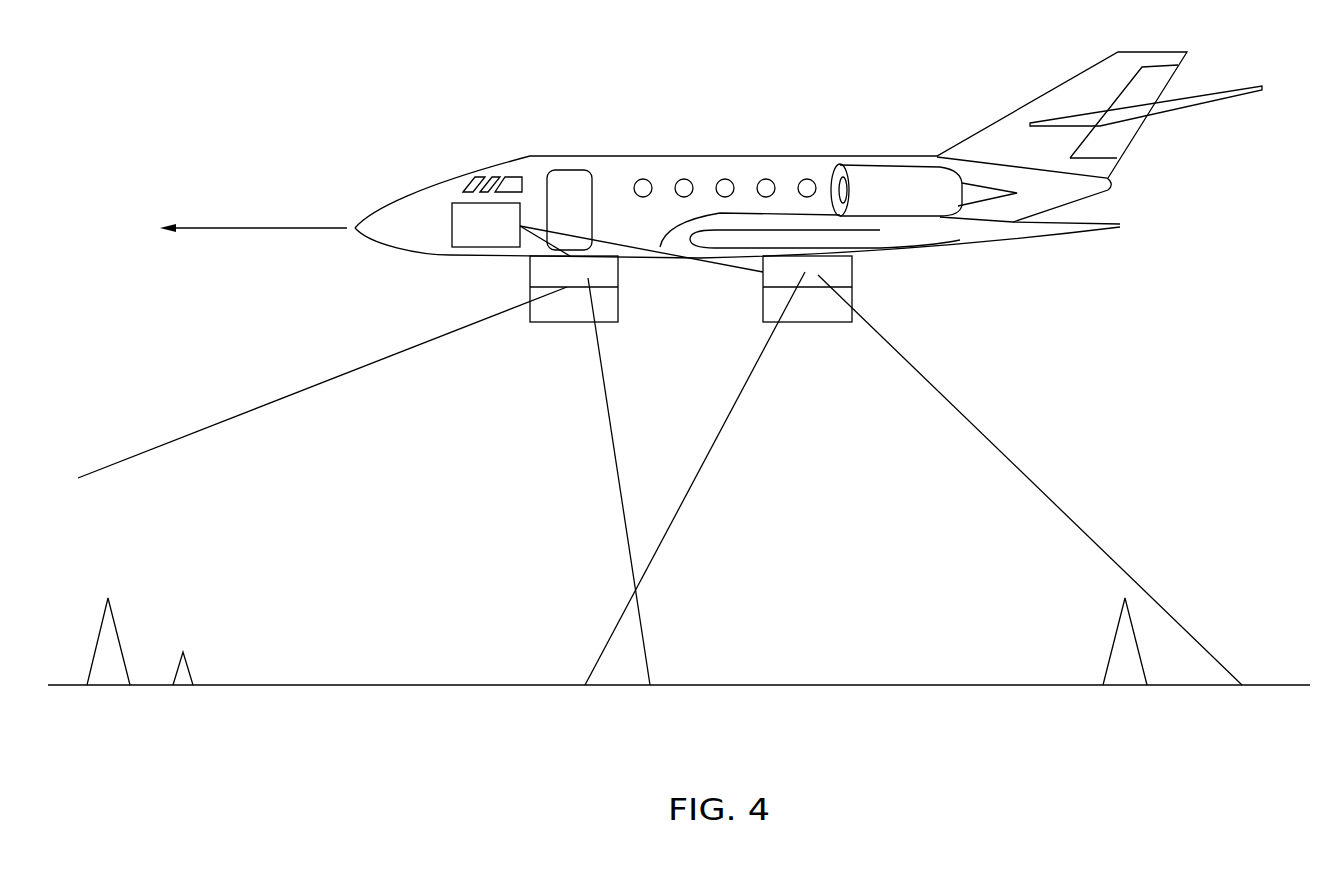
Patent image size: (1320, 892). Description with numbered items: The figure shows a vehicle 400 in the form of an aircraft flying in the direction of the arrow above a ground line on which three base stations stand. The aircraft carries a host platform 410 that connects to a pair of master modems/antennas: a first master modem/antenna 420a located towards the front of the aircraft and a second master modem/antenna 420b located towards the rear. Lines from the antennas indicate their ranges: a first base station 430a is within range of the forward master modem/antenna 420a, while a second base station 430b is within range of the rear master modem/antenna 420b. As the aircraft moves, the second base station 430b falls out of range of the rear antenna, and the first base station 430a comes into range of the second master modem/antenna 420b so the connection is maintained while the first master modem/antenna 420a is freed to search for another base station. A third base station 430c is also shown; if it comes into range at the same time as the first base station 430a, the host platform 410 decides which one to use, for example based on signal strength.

The vehicle 400 is at (687, 155).
The host platform 410 is at (447, 218).
The first master modem/antenna 420a is at (570, 322).
The second master modem/antenna 420b is at (762, 278).
The first base station 430a is at (118, 632).
The second base station 430b is at (1112, 640).
The third base station 430c is at (190, 665).